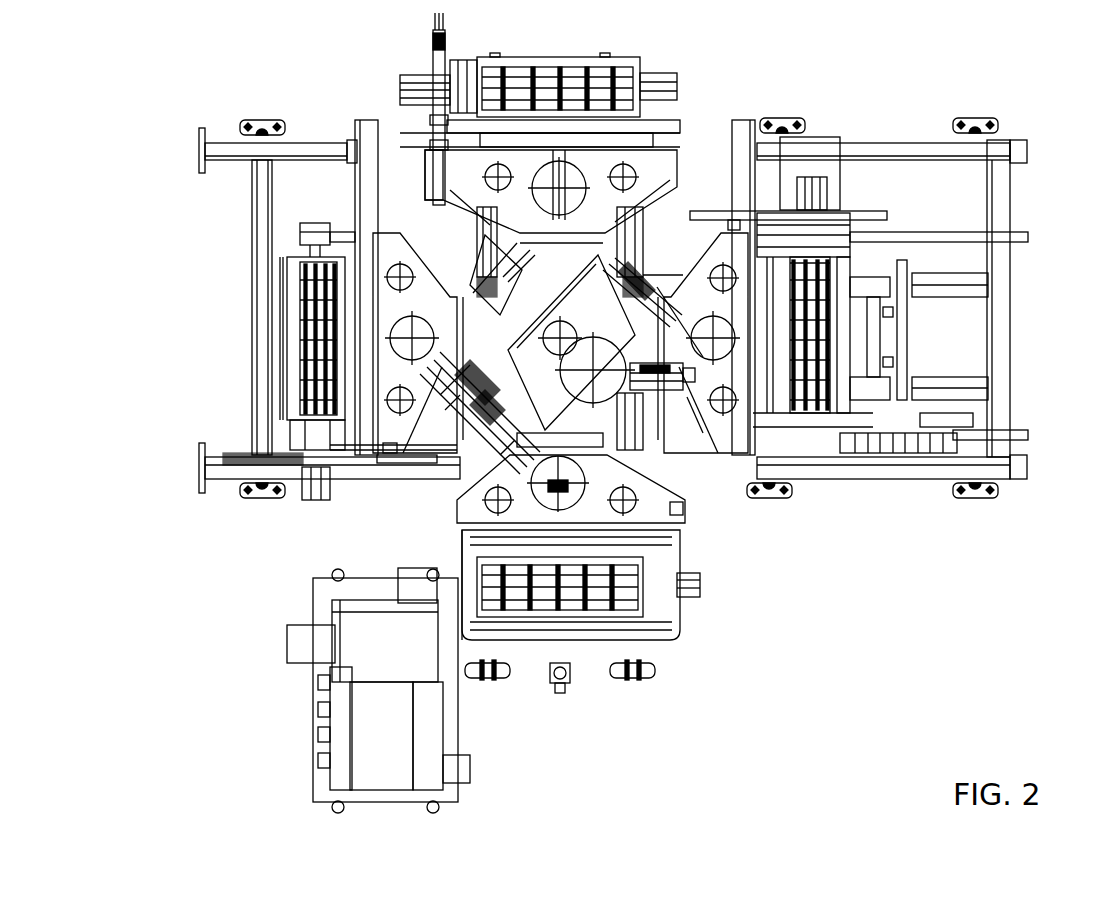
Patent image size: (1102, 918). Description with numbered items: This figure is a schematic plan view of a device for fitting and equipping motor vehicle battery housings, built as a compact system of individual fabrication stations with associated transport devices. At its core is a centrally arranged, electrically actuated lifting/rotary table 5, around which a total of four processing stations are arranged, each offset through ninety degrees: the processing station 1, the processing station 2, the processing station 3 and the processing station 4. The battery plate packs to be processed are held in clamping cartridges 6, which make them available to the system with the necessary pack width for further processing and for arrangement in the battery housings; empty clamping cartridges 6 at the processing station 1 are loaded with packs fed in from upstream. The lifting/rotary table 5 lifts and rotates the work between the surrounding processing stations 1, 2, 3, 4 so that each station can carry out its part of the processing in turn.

The processing station 1 is at (387, 298).
The processing station 2 is at (597, 165).
The processing station 3 is at (733, 302).
The processing station 4 is at (648, 508).
The lifting/rotary table 5 is at (665, 394).
The clamping cartridges 6 is at (300, 402).